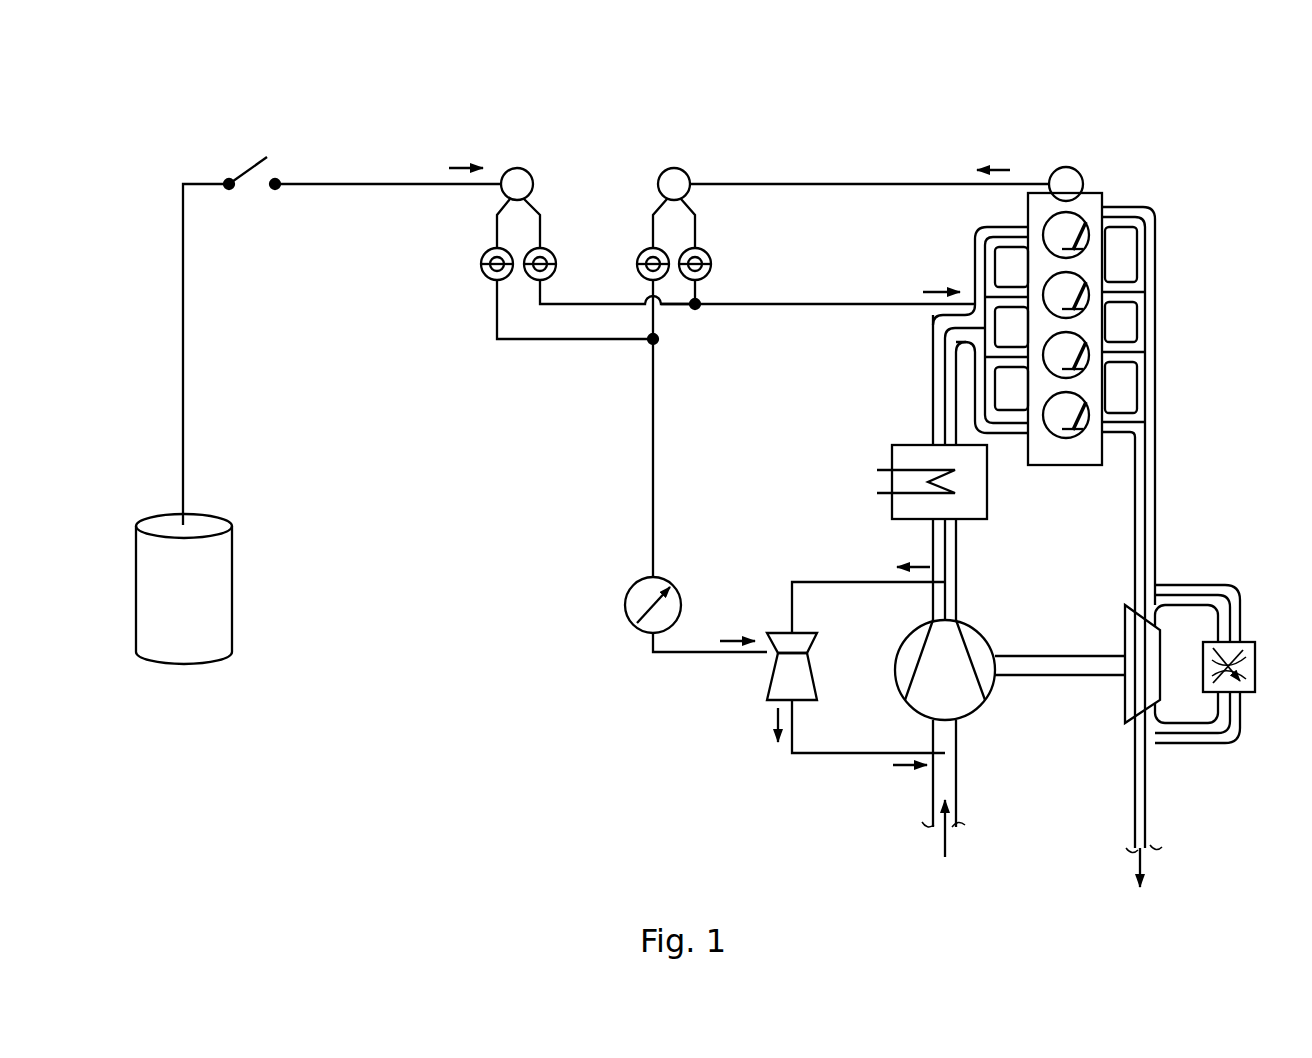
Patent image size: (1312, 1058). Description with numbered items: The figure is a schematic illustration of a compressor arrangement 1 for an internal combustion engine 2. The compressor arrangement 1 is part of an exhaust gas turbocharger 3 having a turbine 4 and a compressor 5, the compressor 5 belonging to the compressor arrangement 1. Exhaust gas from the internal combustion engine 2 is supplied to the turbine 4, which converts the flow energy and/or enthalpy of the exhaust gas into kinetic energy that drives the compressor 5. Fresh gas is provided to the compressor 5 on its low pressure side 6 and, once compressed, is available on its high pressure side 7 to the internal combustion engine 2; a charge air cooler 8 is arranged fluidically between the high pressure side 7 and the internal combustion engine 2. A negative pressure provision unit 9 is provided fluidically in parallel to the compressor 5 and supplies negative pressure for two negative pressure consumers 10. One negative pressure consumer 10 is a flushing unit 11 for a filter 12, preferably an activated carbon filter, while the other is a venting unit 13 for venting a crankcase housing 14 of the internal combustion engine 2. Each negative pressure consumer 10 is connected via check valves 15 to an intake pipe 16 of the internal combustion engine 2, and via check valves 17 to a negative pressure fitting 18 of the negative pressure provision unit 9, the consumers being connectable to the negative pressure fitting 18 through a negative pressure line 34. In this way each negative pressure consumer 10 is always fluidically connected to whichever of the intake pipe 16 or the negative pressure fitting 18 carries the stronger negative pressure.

The compressor arrangement 1 is at (865, 768).
The internal combustion engine 2 is at (1057, 330).
The exhaust gas turbocharger 3 is at (1175, 552).
The turbine 4 is at (1125, 630).
The compressor 5 is at (914, 648).
The low pressure side 6 is at (958, 754).
The high pressure side 7 is at (958, 582).
The charge air cooler 8 is at (988, 500).
The negative pressure provision unit 9 is at (755, 612).
The negative pressure consumer 10 is at (721, 147).
The flushing unit 11 is at (393, 157).
The filter 12 is at (198, 612).
The venting unit 13 is at (845, 158).
The crankcase housing 14 is at (1105, 197).
The check valves 15 is at (543, 248).
The intake pipe 16 is at (973, 268).
The check valves 17 is at (479, 264).
The negative pressure fitting 18 is at (774, 656).
The negative pressure line 34 is at (652, 456).